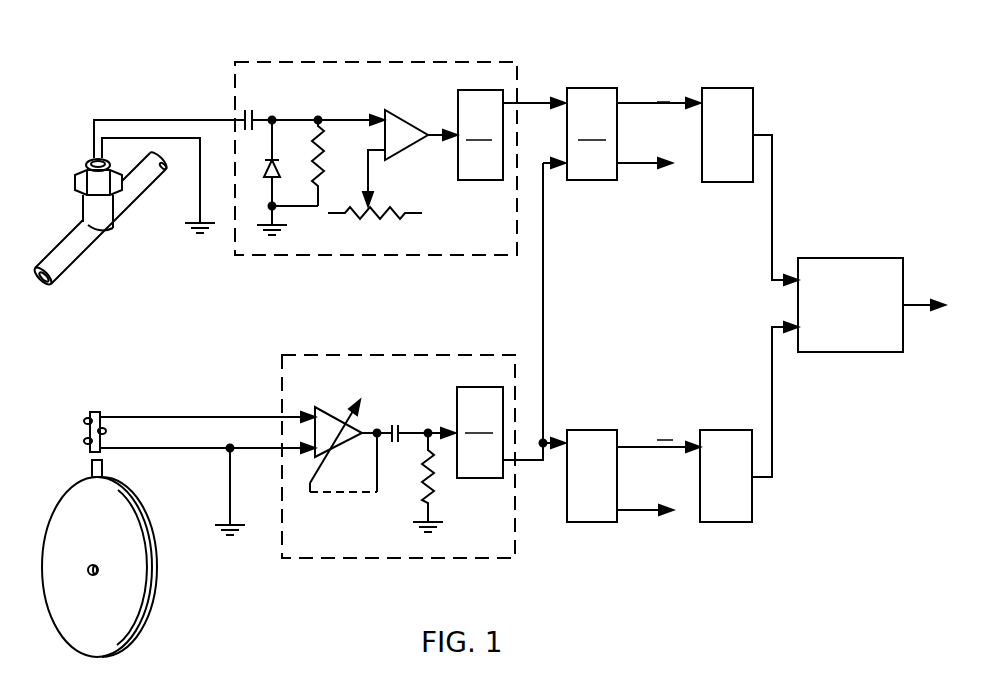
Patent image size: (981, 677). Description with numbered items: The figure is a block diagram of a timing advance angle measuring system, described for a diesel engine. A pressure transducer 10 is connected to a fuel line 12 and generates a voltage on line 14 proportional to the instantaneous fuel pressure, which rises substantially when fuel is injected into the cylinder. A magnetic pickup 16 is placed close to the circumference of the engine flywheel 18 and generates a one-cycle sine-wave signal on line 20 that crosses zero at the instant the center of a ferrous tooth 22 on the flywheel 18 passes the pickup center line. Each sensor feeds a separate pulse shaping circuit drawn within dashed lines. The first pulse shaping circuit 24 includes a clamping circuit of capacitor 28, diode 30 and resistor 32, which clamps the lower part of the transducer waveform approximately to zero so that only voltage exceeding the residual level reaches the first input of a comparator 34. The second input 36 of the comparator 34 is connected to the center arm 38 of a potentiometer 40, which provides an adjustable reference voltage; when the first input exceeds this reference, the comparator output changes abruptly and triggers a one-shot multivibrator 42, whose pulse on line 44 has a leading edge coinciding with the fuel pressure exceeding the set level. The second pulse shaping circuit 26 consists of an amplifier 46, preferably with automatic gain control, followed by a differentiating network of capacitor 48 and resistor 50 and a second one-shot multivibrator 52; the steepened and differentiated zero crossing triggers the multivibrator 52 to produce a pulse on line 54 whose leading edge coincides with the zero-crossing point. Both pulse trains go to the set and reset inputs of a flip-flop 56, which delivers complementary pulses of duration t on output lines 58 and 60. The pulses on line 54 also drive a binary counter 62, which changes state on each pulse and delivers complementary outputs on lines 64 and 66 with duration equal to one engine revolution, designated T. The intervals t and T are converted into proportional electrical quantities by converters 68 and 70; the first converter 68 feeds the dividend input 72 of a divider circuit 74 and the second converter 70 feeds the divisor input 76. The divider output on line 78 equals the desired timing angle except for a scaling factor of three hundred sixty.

The pressure transducer 10 is at (95, 157).
The fuel line 12 is at (88, 248).
The line 14 is at (138, 120).
The magnetic pickup 16 is at (100, 412).
The flywheel 18 is at (123, 613).
The line 20 is at (200, 417).
The ferrous tooth 22 is at (102, 465).
The first pulse shaping circuit 24 is at (335, 61).
The second pulse shaping circuit 26 is at (435, 354).
The capacitor 28 is at (252, 108).
The diode 30 is at (268, 165).
The resistor 32 is at (321, 150).
The comparator 34 is at (410, 120).
The second input 36 is at (375, 152).
The center arm 38 is at (365, 205).
The potentiometer 40 is at (385, 220).
The one-shot multivibrator 42 is at (480, 135).
The line 44 is at (527, 97).
The amplifier 46 is at (332, 407).
The capacitor 48 is at (393, 425).
The resistor 50 is at (430, 503).
The second one-shot multivibrator 52 is at (480, 432).
The line 54 is at (527, 463).
The flip-flop 56 is at (592, 134).
The output line 58 is at (628, 102).
The output line 60 is at (638, 170).
The binary counter 62 is at (590, 430).
The line 64 is at (628, 447).
The line 66 is at (637, 512).
The first converter 68 is at (753, 115).
The second converter 70 is at (752, 498).
The dividend input 72 is at (772, 210).
The divider circuit 74 is at (842, 258).
The divisor input 76 is at (772, 370).
The divider output line 78 is at (905, 307).